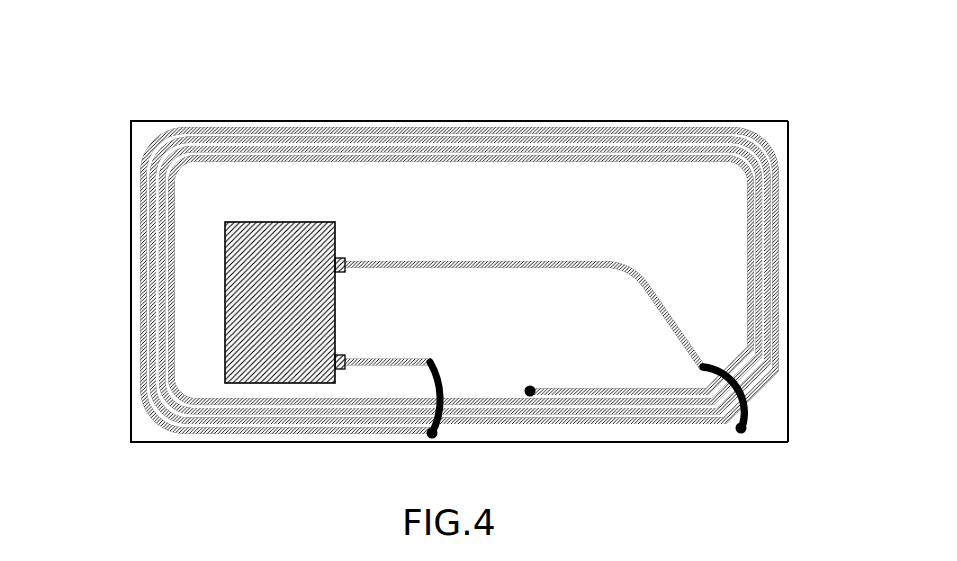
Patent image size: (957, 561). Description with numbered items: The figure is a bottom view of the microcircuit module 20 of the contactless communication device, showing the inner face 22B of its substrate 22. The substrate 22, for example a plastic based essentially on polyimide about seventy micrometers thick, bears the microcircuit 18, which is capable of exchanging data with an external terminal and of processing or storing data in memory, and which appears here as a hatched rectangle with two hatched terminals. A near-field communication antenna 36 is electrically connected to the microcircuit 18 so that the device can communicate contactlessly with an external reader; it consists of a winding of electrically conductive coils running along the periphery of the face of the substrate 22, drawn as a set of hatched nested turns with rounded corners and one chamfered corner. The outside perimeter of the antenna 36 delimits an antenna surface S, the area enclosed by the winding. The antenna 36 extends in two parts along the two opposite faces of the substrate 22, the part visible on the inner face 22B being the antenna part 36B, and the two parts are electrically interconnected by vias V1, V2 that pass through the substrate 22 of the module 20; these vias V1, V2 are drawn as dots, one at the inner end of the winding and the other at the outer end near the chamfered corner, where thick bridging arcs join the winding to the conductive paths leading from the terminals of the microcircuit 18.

The microcircuit module 20 is at (96, 101).
The substrate 22 is at (499, 304).
The inner face 22B is at (788, 268).
The antenna surface S is at (420, 190).
The near-field communication antenna 36 is at (460, 238).
The second antenna part 36B is at (305, 131).
The microcircuit 18 is at (283, 238).
The via V1 is at (530, 387).
The via V2 is at (740, 433).